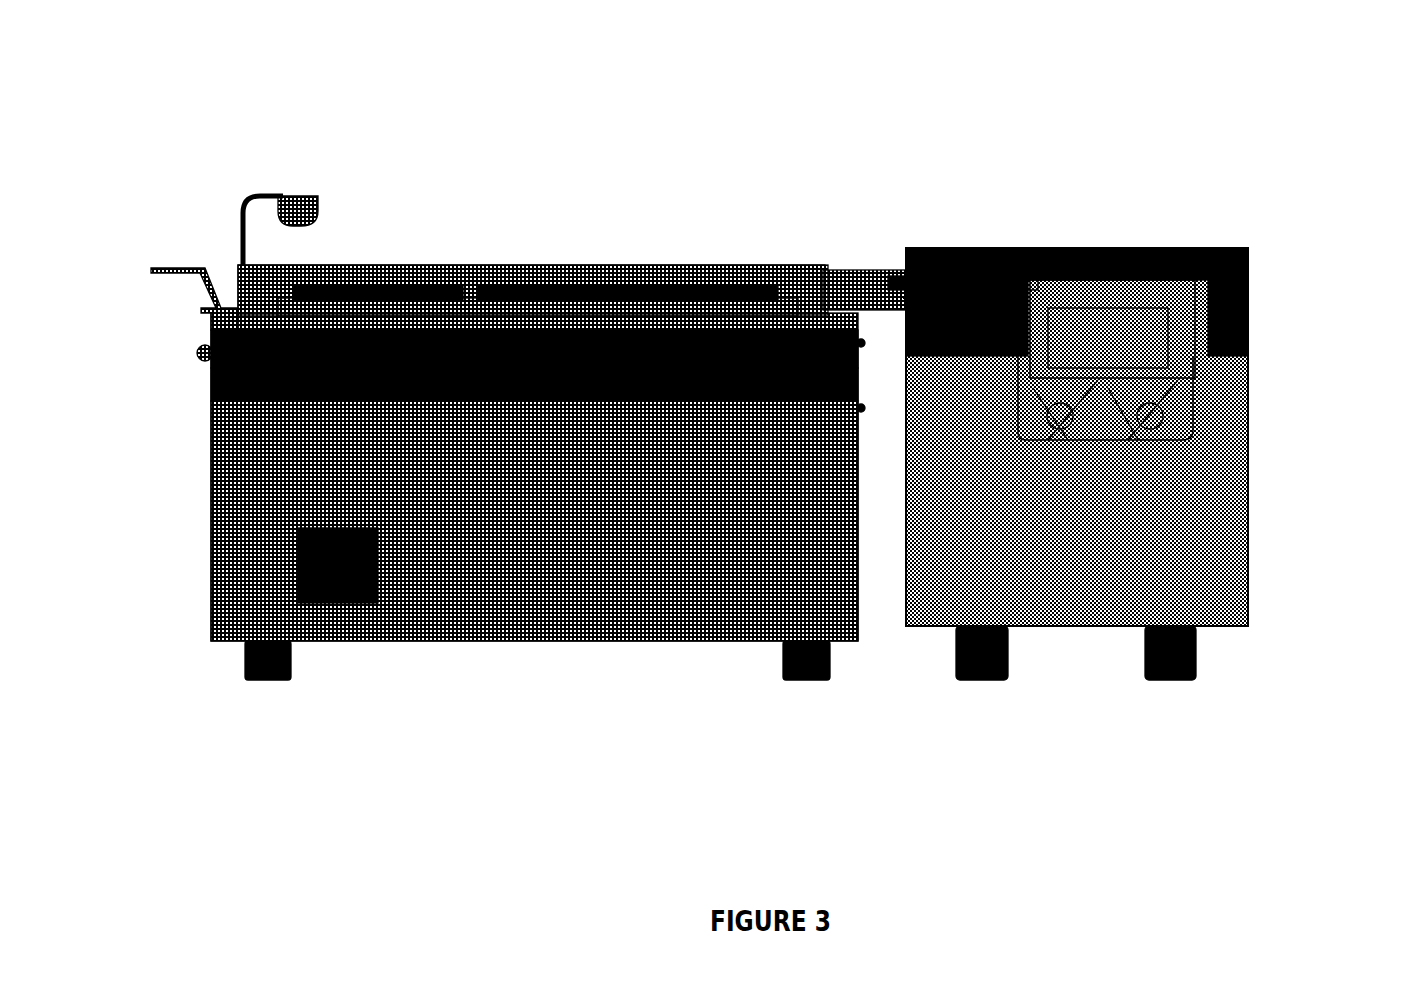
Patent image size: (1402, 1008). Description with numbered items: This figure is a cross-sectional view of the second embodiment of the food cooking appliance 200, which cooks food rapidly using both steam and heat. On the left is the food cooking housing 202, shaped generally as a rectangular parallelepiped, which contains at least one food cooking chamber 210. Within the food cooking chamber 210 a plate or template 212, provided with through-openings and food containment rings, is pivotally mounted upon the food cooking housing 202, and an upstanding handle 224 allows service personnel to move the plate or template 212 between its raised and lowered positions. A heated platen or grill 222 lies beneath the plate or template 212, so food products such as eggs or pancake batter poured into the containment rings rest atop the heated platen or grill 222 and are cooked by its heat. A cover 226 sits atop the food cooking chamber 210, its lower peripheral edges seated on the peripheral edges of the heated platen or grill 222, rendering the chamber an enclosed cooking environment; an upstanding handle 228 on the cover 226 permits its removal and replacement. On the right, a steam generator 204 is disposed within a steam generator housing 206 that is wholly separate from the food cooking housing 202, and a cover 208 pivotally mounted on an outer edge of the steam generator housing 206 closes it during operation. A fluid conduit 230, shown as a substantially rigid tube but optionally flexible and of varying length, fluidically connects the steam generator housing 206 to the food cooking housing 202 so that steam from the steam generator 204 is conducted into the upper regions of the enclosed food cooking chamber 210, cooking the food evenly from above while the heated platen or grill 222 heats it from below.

The food cooking appliance 200 is at (782, 96).
The food cooking housing 202 is at (200, 490).
The steam generator 204 is at (1200, 410).
The steam generator housing 206 is at (1240, 550).
The cover 208 is at (1240, 282).
The food cooking chamber 210 is at (550, 257).
The plate or template 212 is at (372, 257).
The heated platen or grill 222 is at (200, 380).
The upstanding handle 224 is at (172, 257).
The cover 226 is at (340, 257).
The upstanding handle 228 is at (281, 182).
The fluid conduit 230 is at (943, 243).